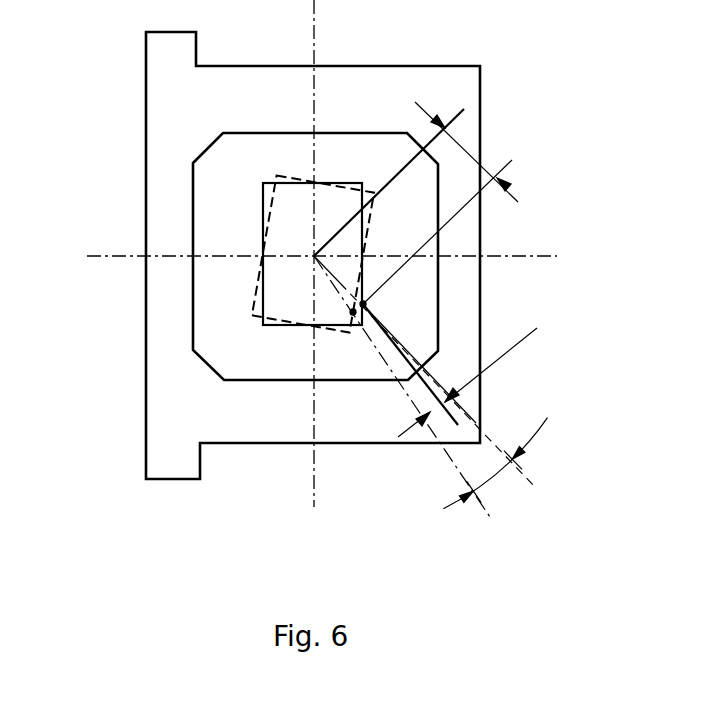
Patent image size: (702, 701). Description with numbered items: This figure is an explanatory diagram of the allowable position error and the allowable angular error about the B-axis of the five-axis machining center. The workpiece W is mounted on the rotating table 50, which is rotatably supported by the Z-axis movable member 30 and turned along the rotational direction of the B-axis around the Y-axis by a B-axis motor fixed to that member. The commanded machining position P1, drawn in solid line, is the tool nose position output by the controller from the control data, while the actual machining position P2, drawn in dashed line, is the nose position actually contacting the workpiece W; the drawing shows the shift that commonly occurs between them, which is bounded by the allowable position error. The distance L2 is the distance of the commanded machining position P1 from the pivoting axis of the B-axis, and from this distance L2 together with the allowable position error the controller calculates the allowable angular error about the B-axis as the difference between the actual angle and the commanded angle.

The Z-axis movable member 30 is at (146, 363).
The rotating table 50 is at (193, 283).
The workpiece W is at (263, 202).
The commanded machining position P1 is at (363, 304).
The actual machining position P2 is at (353, 312).
The distance L2 is at (487, 163).